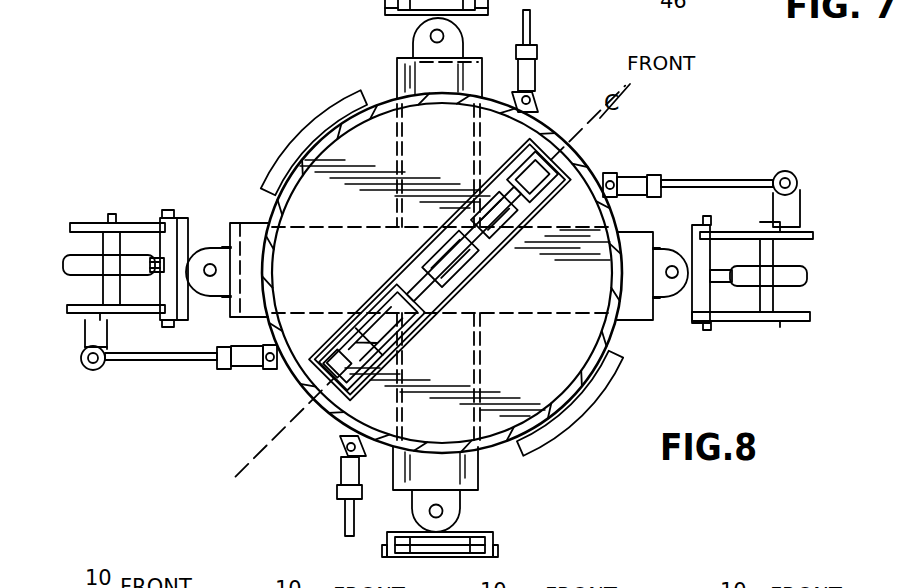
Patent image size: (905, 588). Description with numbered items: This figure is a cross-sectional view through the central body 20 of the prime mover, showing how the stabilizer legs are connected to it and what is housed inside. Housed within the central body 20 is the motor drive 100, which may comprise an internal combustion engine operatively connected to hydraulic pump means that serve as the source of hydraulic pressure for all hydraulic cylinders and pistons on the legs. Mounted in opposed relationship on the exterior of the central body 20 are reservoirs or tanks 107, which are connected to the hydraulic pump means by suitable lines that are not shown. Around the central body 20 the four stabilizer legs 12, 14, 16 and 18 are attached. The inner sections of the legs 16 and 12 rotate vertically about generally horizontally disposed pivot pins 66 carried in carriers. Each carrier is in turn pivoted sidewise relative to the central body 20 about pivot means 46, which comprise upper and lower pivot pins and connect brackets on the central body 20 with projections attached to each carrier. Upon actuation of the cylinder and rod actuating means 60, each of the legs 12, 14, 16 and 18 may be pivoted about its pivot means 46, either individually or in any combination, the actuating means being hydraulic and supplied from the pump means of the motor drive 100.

The leg 12 is at (742, 327).
The leg 14 is at (388, 12).
The leg 16 is at (150, 217).
The leg 18 is at (405, 550).
The central body 20 is at (552, 130).
The pivot means 46 is at (432, 37).
The cylinder and rod actuating means 60 is at (527, 76).
The pivot pins 66 is at (106, 214).
The motor drive 100 is at (383, 261).
The reservoirs or tanks 107 is at (303, 121).